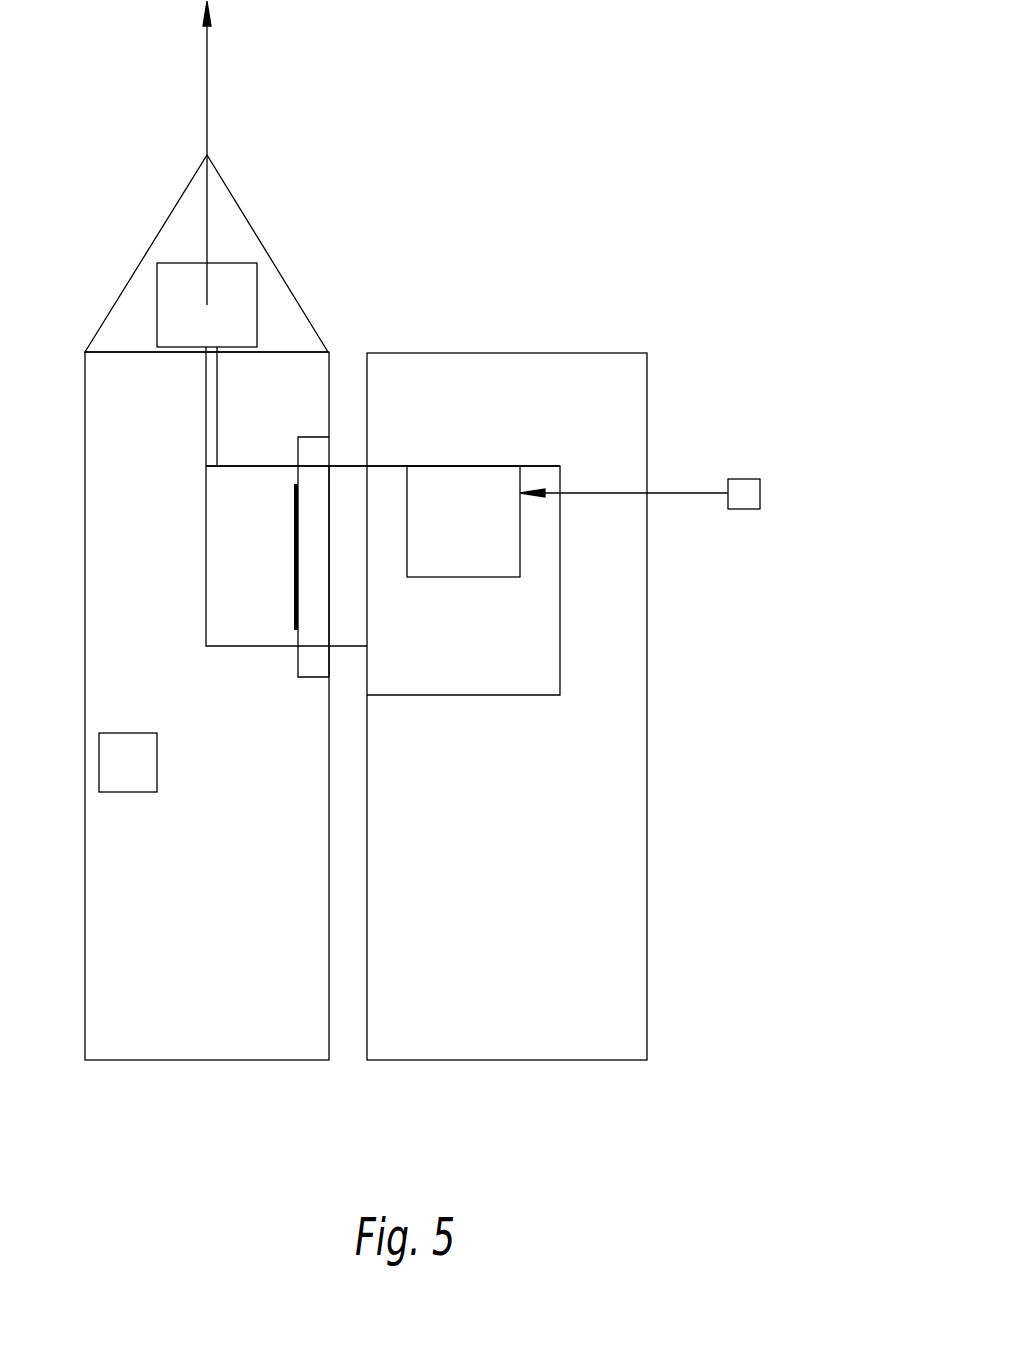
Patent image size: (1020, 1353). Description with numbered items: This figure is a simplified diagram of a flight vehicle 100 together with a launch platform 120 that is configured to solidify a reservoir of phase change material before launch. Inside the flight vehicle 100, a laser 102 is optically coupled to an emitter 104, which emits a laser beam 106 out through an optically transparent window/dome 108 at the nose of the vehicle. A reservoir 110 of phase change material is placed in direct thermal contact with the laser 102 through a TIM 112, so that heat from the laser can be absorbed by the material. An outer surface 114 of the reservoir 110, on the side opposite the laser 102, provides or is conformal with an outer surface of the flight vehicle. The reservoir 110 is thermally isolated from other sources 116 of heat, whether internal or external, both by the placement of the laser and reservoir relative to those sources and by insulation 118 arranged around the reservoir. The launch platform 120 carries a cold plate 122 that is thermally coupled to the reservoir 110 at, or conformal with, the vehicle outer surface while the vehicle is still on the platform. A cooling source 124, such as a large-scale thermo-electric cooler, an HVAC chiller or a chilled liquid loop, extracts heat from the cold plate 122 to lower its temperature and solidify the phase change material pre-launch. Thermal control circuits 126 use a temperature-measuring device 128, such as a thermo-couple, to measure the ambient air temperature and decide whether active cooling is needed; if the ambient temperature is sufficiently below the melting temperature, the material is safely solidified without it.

The flight vehicle 100 is at (735, 55).
The laser 102 is at (206, 583).
The emitter 104 is at (165, 285).
The laser beam 106 is at (208, 95).
The optically transparent window/dome 108 is at (170, 211).
The reservoir 110 is at (308, 519).
The TIM 112 is at (297, 556).
The outer surface 114 is at (330, 612).
The other sources of heat 116 is at (128, 794).
The insulation 118 is at (307, 669).
The launch platform 120 is at (507, 351).
The cold plate 122 is at (348, 465).
The cooling source 124 is at (560, 576).
The thermal control circuits 126 is at (512, 527).
The temperature-measuring device 128 is at (745, 477).